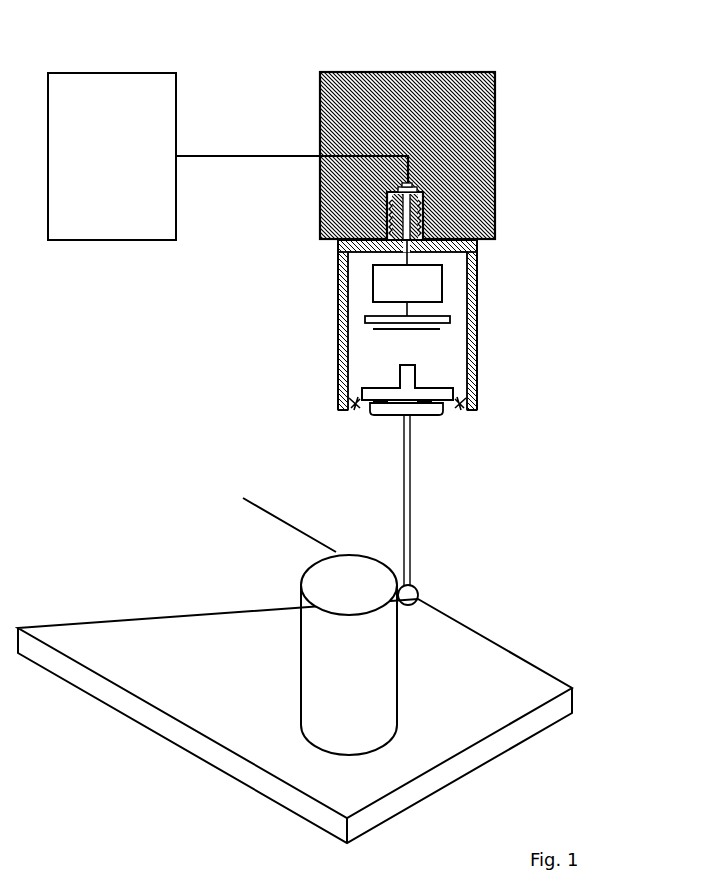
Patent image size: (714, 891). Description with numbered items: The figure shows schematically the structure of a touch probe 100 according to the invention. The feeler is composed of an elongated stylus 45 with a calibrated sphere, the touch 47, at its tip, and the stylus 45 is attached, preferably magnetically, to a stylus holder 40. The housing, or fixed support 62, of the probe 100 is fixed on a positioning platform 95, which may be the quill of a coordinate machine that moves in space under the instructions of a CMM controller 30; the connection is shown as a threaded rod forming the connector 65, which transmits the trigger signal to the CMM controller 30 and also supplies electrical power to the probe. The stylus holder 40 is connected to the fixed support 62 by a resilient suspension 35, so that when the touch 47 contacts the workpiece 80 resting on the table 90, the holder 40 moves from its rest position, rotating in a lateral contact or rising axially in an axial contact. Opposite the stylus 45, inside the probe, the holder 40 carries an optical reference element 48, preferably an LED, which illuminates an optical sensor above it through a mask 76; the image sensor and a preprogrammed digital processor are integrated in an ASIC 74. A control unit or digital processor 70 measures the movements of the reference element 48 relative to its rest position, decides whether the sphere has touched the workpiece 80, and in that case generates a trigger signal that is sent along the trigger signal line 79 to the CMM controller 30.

The CMM controller 30 is at (168, 230).
The trigger signal line 79 is at (213, 158).
The connector 65 is at (426, 208).
The positioning platform 95 is at (497, 238).
The fixed support 62 is at (470, 298).
The touch probe 100 is at (489, 359).
The digital processor 70 is at (431, 294).
The ASIC 74 is at (450, 320).
The mask 76 is at (403, 331).
The reference element 48 is at (406, 365).
The stylus holder 40 is at (452, 409).
The suspension 35 is at (350, 412).
The stylus 45 is at (404, 516).
The touch 47 is at (414, 588).
The table 90 is at (504, 646).
The workpiece 80 is at (397, 698).